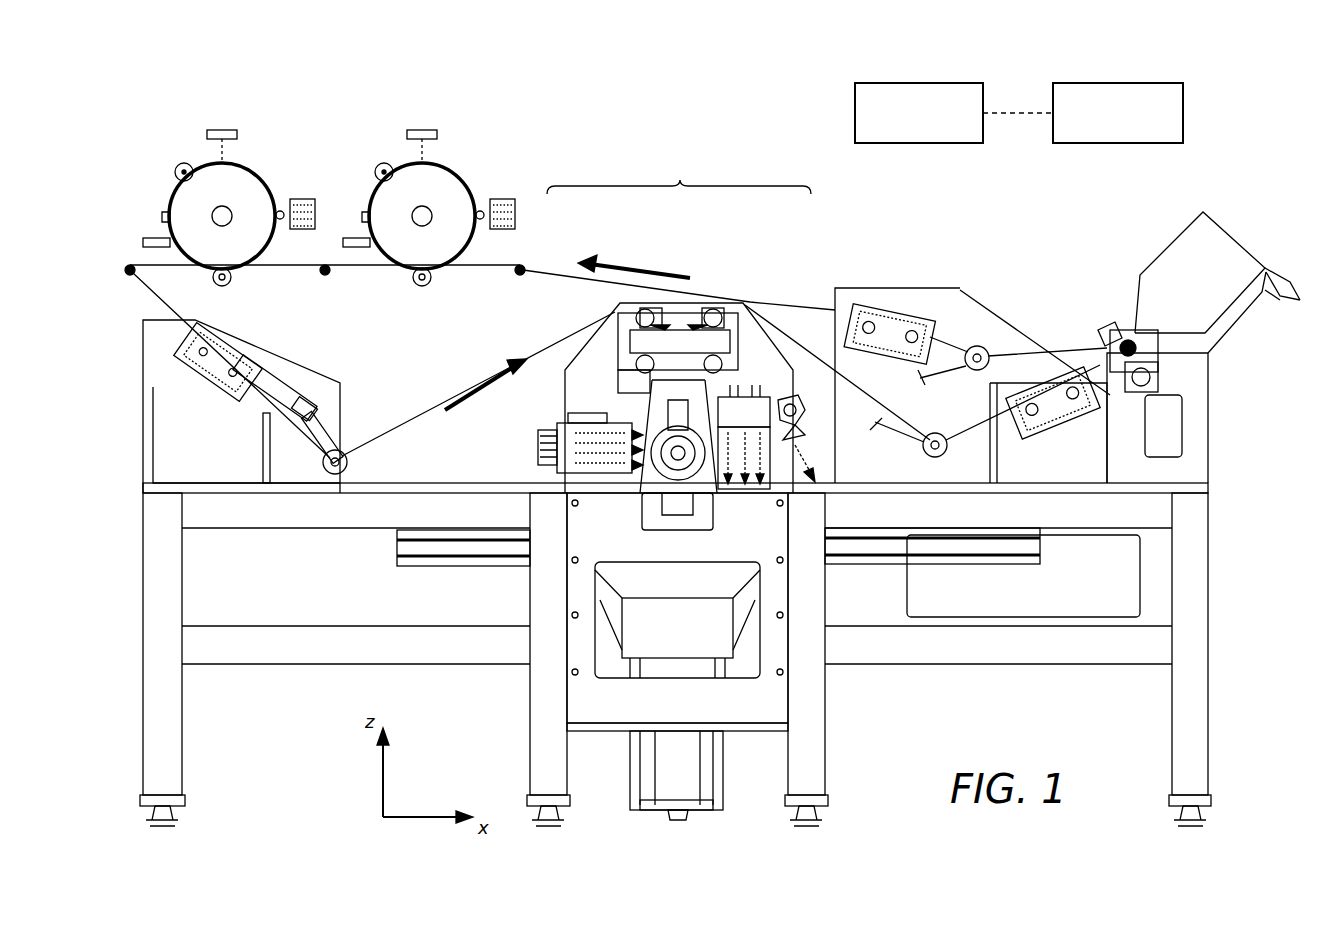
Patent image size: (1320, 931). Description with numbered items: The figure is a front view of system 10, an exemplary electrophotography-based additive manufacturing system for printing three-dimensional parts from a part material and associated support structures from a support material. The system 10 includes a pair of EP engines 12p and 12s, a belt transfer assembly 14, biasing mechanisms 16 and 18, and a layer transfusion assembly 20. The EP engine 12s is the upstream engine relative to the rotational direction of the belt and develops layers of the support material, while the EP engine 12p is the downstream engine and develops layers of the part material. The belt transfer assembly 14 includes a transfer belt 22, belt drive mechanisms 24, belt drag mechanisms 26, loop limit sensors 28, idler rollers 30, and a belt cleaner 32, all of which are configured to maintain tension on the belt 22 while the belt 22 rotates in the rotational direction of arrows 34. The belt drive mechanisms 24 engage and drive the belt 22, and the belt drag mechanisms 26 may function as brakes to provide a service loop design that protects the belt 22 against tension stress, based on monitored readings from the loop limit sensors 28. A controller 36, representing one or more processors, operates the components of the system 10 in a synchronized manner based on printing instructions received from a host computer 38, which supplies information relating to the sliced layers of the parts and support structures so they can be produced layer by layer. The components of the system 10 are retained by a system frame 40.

The system 10 is at (165, 101).
The EP engine 12p is at (246, 155).
The EP engine 12s is at (470, 177).
The belt transfer assembly 14 is at (197, 412).
The biasing mechanism 16 is at (418, 287).
The biasing mechanism 18 is at (232, 282).
The layer transfusion assembly 20 is at (676, 490).
The transfer belt 22 is at (426, 428).
The belt drive mechanism 24 is at (237, 352).
The belt drag mechanism 26 is at (622, 318).
The loop limit sensor 28 is at (330, 472).
The idler roller 30 is at (126, 276).
The belt cleaner 32 is at (1178, 240).
The arrows 34 is at (505, 372).
The controller 36 is at (948, 143).
The host computer 38 is at (1163, 143).
The system frame 40 is at (356, 655).